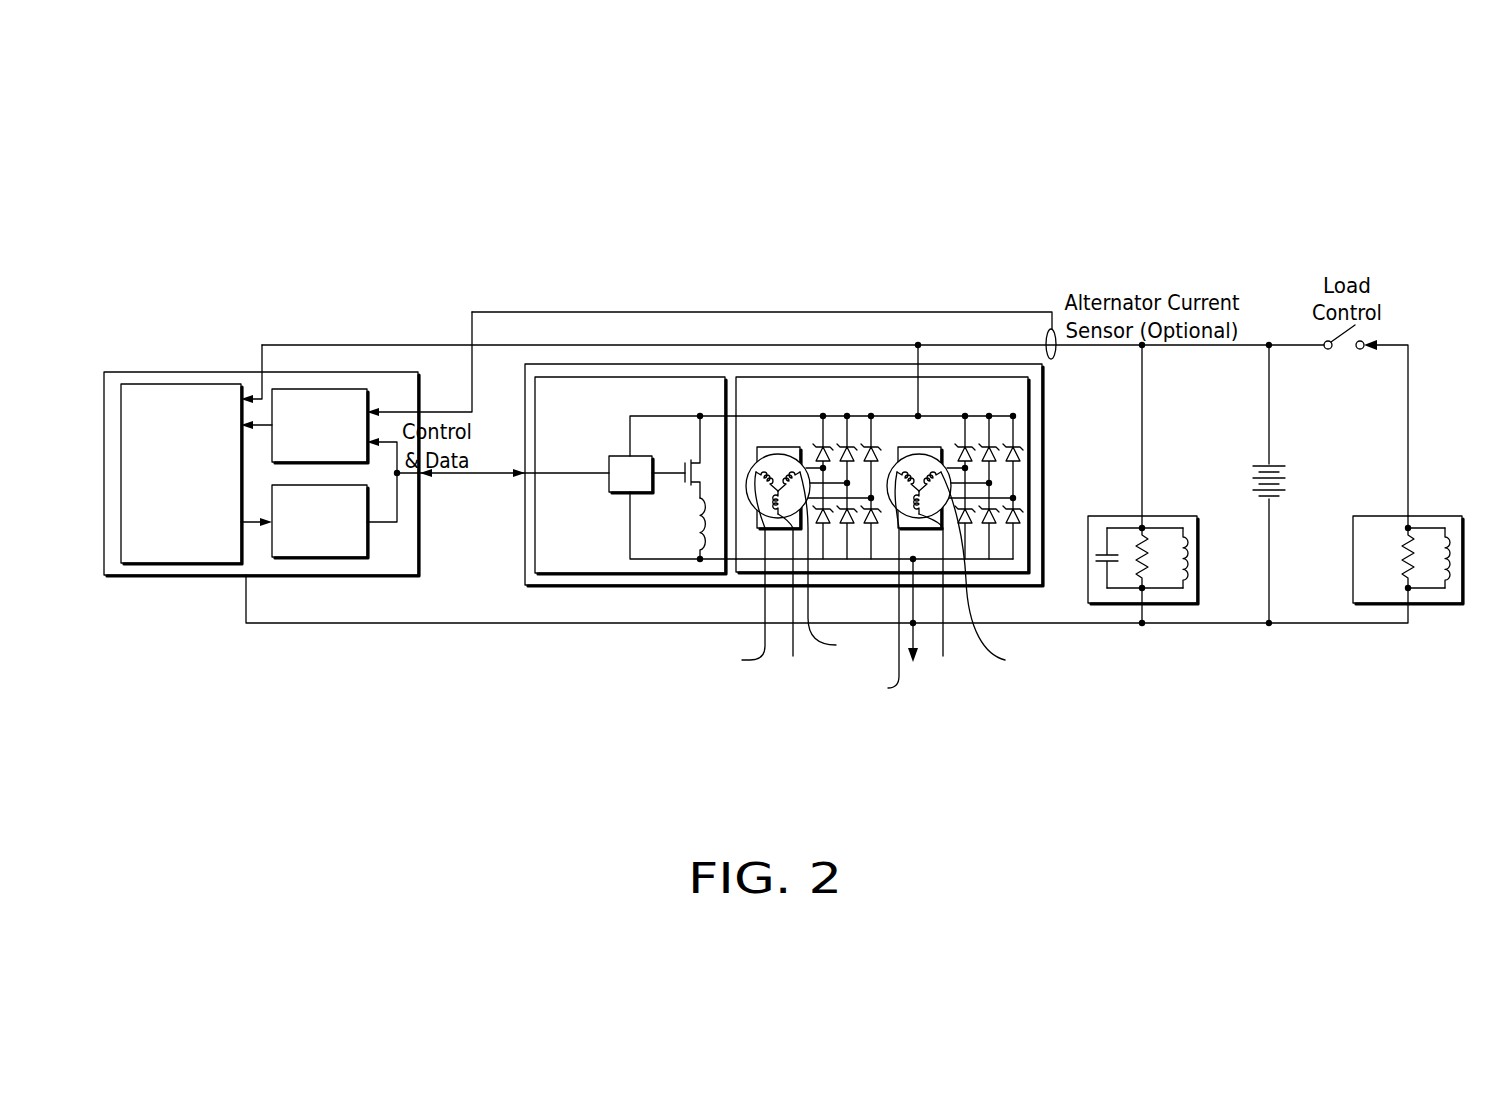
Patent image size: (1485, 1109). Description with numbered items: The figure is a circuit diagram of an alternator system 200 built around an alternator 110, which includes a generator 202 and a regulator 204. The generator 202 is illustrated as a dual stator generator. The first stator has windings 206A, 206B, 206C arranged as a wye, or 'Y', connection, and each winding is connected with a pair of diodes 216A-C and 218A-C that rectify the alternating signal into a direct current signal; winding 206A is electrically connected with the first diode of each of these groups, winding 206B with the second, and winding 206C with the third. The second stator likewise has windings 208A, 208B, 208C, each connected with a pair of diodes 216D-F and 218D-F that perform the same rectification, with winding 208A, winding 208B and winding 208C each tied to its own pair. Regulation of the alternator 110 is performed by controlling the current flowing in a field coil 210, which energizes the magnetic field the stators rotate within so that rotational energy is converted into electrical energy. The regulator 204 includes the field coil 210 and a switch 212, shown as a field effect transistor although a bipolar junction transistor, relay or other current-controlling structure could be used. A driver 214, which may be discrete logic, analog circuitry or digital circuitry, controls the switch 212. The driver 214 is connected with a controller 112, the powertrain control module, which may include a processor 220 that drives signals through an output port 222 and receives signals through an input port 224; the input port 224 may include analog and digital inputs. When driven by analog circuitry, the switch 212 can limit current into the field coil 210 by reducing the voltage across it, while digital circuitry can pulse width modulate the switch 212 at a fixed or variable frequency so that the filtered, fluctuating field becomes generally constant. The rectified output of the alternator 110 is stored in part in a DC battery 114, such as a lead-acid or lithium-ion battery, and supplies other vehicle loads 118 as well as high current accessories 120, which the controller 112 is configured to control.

The alternator system 200 is at (1095, 196).
The alternator 110 is at (600, 586).
The controller 112 is at (261, 470).
The DC battery 114 is at (1262, 464).
The vehicle loads 118 is at (1167, 516).
The high current accessories 120 is at (1353, 558).
The generator 202 is at (875, 377).
The regulator 204 is at (563, 573).
The first stator winding 206A is at (734, 574).
The first stator winding 206B is at (786, 586).
The first stator winding 206C is at (832, 564).
The second stator winding 208A is at (987, 574).
The second stator winding 208B is at (876, 586).
The second stator winding 208C is at (942, 585).
The field coil 210 is at (712, 527).
The switch 212 is at (692, 461).
The driver 214 is at (609, 482).
The diodes 216A-C is at (821, 446).
The diodes 216D-F is at (963, 446).
The diodes 218A-C is at (826, 524).
The diodes 218D-F is at (968, 524).
The processor 220 is at (180, 563).
The output port 222 is at (318, 557).
The input port 224 is at (342, 389).